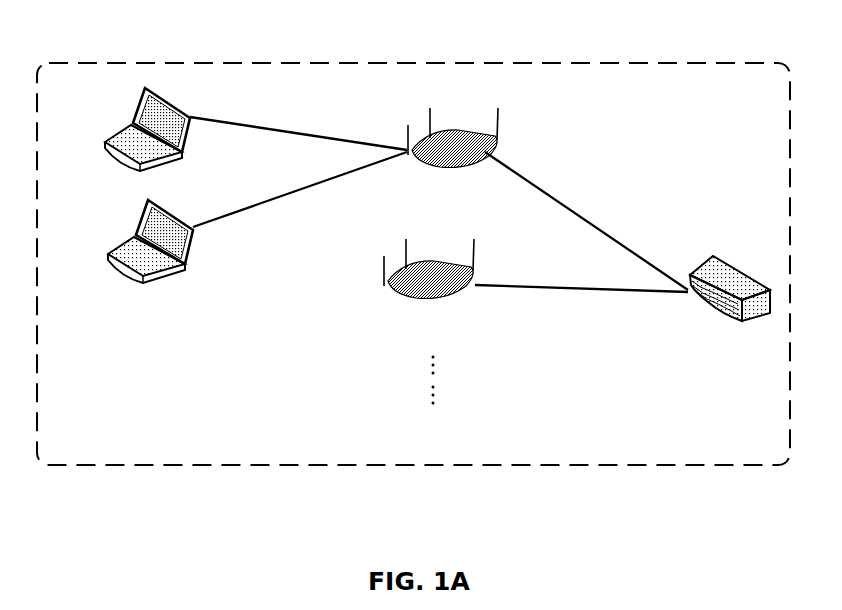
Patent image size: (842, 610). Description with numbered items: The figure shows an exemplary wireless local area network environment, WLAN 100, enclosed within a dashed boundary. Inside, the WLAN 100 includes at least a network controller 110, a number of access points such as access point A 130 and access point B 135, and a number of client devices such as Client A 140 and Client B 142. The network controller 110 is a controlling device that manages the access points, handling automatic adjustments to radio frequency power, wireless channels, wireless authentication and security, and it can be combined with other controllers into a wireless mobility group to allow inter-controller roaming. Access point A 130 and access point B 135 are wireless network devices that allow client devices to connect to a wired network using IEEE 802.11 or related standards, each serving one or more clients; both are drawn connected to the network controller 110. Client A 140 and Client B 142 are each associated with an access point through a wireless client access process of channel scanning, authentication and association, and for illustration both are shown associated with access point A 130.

The WLAN 100 is at (138, 47).
The Client A 140 is at (102, 120).
The Client B 142 is at (104, 261).
The access point A 130 is at (467, 216).
The access point B 135 is at (449, 340).
The network controller 110 is at (663, 366).